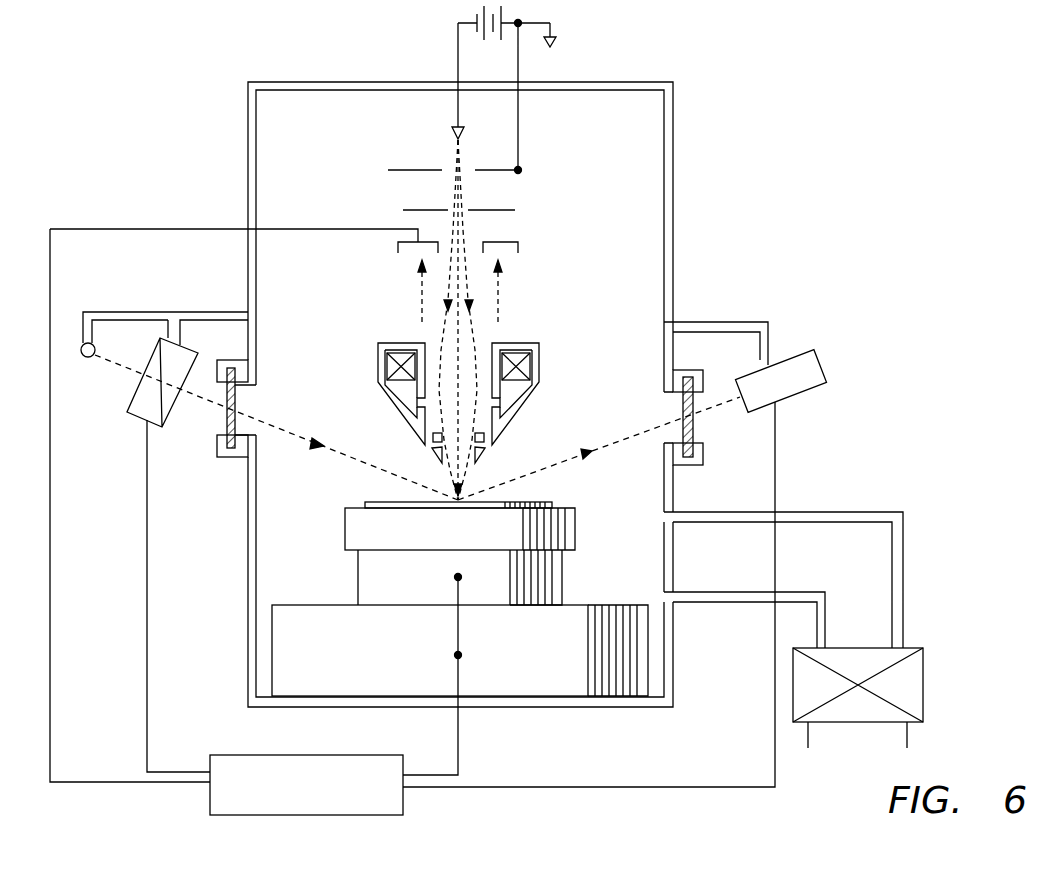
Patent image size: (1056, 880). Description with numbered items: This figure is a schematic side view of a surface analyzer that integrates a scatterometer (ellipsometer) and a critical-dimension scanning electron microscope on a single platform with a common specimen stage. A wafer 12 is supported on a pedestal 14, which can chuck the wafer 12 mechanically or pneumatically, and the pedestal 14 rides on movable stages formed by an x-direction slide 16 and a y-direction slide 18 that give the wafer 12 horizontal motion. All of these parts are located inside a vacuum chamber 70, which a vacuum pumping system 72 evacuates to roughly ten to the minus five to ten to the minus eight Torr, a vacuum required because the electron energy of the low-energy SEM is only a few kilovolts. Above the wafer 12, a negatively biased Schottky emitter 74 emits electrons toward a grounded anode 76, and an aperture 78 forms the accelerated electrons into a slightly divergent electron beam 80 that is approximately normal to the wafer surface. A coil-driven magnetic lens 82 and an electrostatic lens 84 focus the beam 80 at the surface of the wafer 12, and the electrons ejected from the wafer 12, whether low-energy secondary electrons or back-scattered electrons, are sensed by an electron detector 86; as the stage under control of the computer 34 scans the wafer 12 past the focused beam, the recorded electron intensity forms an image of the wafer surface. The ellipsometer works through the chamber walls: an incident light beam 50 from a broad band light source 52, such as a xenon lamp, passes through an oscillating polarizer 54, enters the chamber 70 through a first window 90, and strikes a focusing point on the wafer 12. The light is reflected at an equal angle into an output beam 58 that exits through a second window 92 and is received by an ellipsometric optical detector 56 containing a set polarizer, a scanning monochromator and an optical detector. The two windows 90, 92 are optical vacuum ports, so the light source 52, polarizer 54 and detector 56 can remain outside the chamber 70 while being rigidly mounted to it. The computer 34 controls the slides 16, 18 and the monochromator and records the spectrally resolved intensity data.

The wafer 12 is at (365, 502).
The work piece holder 14 is at (344, 530).
The x-direction slide 16 is at (358, 567).
The y-direction slide 18 is at (291, 605).
The computer 34 is at (230, 755).
The incident light beam 50 is at (281, 428).
The broad band light source 52 is at (83, 367).
The oscillating polarizer 54 is at (128, 393).
The ellipsometric optical detector 56 is at (820, 362).
The reflected beam 58 is at (640, 432).
The vacuum chamber 70 is at (674, 170).
The vacuum pumping system 72 is at (923, 690).
The Schottky emitter 74 is at (452, 130).
The grounded anode 76 is at (393, 170).
The aperture 78 is at (515, 209).
The electron beam 80 is at (465, 231).
The coil-driven magnetic lens 82 is at (542, 363).
The electrostatic lens 84 is at (483, 460).
The electron detector 86 is at (518, 250).
The window 90 is at (220, 425).
The window 92 is at (693, 427).